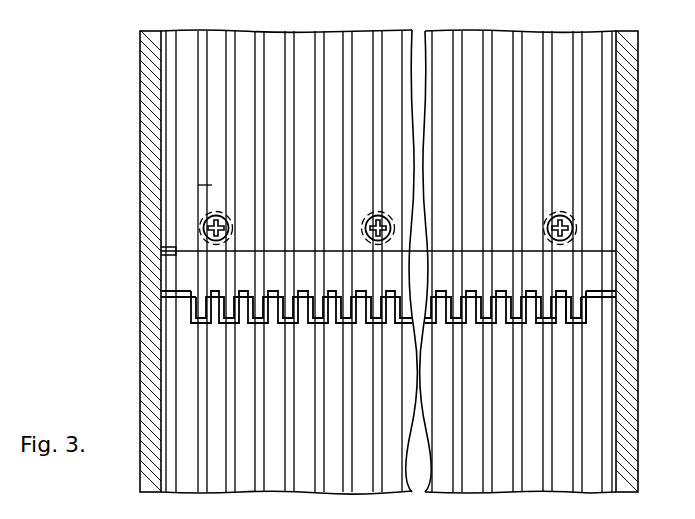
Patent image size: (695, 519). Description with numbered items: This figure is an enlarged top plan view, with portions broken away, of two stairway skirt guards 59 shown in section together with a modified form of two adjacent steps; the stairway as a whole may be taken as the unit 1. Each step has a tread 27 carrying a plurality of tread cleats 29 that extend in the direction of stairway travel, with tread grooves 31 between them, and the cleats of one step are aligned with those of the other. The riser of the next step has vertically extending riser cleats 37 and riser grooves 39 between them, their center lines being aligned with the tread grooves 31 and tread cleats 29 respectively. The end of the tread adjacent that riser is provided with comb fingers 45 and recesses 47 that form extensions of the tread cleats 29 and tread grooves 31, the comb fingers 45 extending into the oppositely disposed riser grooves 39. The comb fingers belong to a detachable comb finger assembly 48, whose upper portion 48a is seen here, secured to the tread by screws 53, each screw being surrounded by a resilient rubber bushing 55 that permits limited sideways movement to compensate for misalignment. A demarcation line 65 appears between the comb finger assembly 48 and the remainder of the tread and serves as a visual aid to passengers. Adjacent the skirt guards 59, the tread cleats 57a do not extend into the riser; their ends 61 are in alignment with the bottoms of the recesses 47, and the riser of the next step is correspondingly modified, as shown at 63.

The wall panel 1 is at (618, 55).
The stairway skirt guards 59 is at (150, 70).
The tread cleats 57a is at (168, 130).
The tread 27 is at (618, 192).
The tread cleats 29 is at (548, 118).
The tread grooves 31 is at (590, 157).
The comb finger assembly 48 is at (590, 270).
The upper bar portion 48a is at (212, 189).
The demarcation line 65 is at (168, 251).
The ends of tread cleats 61 is at (176, 290).
The modified riser portion 63 is at (185, 300).
The recesses 47 is at (566, 291).
The comb fingers 45 is at (577, 322).
The riser cleats 37 is at (562, 312).
The riser grooves 39 is at (545, 325).
The screws 53 is at (205, 228).
The bushing 55 is at (200, 212).